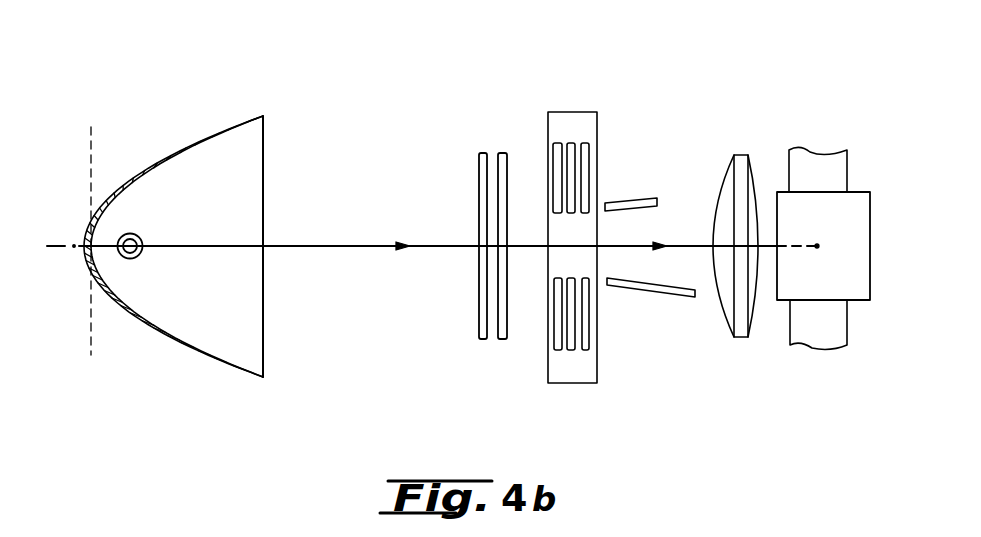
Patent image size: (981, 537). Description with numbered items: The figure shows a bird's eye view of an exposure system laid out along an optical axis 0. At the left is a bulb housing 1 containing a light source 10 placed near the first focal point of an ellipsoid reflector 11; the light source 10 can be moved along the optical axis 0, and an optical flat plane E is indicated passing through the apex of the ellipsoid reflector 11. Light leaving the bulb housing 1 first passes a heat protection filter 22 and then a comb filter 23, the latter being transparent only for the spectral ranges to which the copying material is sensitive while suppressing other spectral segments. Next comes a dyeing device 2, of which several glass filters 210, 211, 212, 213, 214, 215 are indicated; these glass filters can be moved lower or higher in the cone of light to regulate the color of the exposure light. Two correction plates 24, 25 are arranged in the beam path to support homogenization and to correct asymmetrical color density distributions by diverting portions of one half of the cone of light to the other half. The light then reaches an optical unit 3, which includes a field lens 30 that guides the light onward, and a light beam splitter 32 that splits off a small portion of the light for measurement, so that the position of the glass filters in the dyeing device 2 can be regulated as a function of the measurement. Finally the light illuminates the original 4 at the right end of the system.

The optical axis 0 is at (332, 245).
The bulb housing 1 is at (173, 214).
The optical flat plane E is at (92, 150).
The light source 10 is at (138, 254).
The ellipsoid reflector 11 is at (157, 341).
The heat protection filter 22 is at (479, 172).
The comb filter 23 is at (503, 153).
The dyeing device 2 is at (561, 240).
The glass filter 210 is at (552, 152).
The glass filter 211 is at (557, 343).
The glass filter 212 is at (571, 145).
The glass filter 213 is at (577, 350).
The glass filter 214 is at (586, 152).
The glass filter 215 is at (588, 343).
The correction plate 24 is at (660, 293).
The correction plate 25 is at (630, 205).
The field lens 30 is at (734, 165).
The optical unit 3 is at (813, 212).
The light beam splitter 32 is at (817, 205).
The original 4 is at (818, 332).